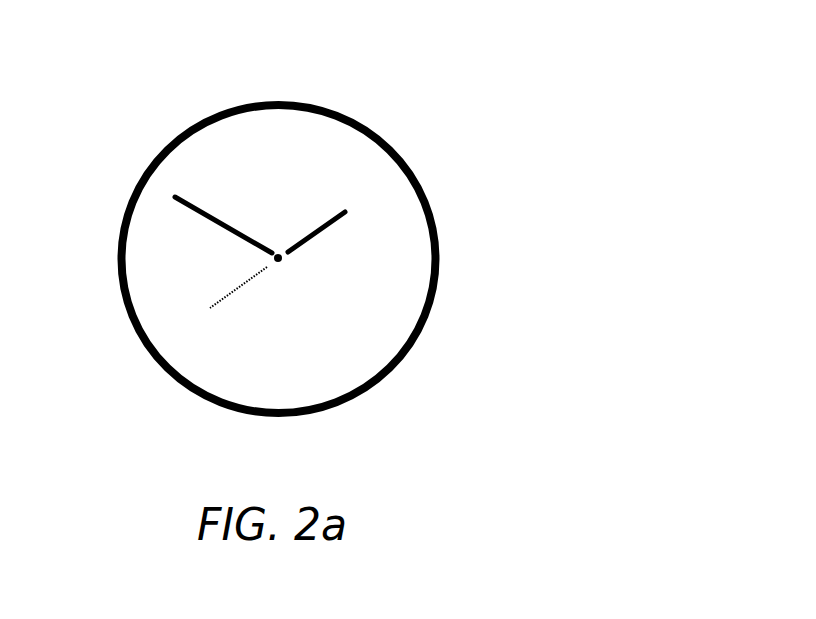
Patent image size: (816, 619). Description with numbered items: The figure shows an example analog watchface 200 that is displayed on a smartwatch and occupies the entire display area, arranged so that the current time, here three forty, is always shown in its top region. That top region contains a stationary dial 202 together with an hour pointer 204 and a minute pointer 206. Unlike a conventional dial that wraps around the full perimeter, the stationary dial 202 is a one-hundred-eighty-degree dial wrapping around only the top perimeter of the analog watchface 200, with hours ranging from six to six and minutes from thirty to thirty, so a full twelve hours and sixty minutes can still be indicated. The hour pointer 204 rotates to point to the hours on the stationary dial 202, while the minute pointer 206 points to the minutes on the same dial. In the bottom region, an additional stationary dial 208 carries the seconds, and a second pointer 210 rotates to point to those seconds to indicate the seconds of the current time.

The analog watchface 200 is at (413, 86).
The stationary dial 202 is at (150, 197).
The hour pointer 204 is at (303, 247).
The minute pointer 206 is at (232, 227).
The additional stationary dial 208 is at (203, 362).
The second pointer 210 is at (247, 280).